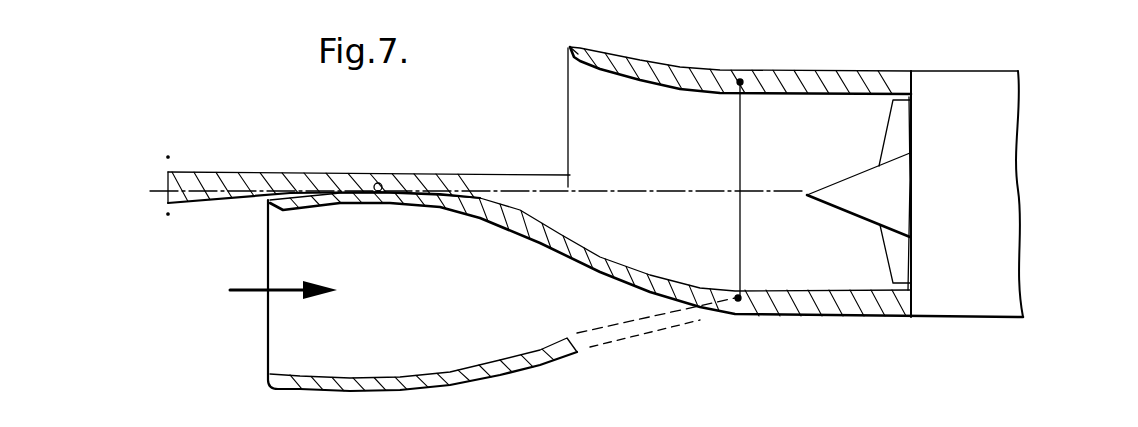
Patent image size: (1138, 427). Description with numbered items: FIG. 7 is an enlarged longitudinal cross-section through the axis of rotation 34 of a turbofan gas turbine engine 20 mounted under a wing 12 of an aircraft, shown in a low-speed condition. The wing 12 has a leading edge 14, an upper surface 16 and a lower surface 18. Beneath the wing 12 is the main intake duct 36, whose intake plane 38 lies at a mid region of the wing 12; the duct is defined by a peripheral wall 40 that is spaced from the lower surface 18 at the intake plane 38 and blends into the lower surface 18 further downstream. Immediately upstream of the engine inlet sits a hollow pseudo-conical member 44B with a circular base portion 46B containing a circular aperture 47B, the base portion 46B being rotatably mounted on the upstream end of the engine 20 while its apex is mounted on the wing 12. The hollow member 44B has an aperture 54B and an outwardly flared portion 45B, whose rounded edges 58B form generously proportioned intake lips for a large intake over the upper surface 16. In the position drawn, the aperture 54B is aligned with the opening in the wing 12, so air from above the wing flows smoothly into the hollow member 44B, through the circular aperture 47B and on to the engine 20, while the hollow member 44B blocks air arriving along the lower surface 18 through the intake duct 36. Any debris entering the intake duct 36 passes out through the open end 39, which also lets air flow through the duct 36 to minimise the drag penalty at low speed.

The wing 12 is at (226, 158).
The upper surface 16 is at (201, 171).
The leading edge 14 is at (298, 166).
The lower surface 18 is at (203, 205).
The main intake duct 36 is at (420, 303).
The intake plane 38 is at (267, 330).
The peripheral wall 40 is at (357, 387).
The open end 39 is at (679, 339).
The rounded edges 58B is at (568, 82).
The aperture 54B is at (568, 143).
The outwardly flared portion 45B is at (582, 52).
The hollow member 44B is at (650, 66).
The circular base portion 46B is at (713, 70).
The circular aperture 47B is at (734, 118).
The axis of rotation 34 is at (795, 195).
The turbofan gas turbine engine 20 is at (977, 287).